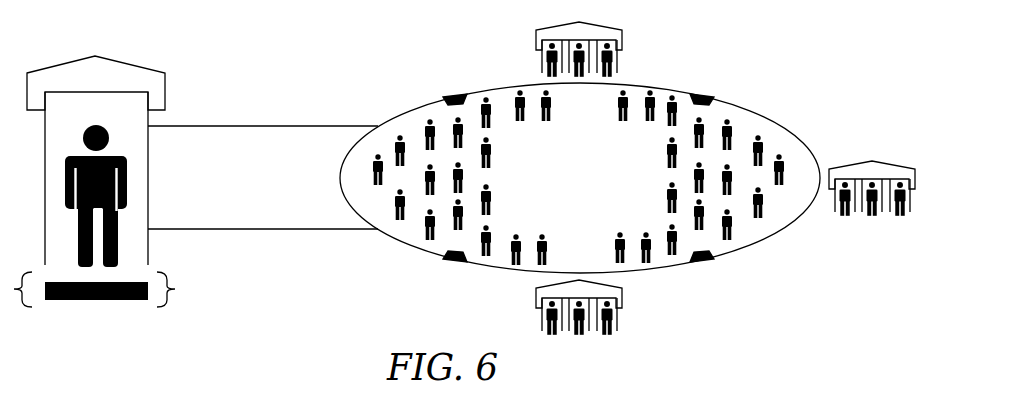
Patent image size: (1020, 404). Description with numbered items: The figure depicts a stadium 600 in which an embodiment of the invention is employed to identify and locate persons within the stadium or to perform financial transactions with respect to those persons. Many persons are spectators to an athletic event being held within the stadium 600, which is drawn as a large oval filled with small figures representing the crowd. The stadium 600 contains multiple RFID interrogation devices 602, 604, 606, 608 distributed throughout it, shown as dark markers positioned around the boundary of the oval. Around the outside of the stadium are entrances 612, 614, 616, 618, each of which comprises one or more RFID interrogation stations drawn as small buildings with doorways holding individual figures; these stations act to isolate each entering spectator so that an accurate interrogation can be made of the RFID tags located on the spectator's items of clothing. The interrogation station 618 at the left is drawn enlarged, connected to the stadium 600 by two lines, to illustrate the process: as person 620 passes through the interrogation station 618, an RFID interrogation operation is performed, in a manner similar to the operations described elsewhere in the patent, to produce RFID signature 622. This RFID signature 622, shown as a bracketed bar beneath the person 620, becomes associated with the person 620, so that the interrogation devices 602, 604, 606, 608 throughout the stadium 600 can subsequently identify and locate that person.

The stadium 600 is at (341, 173).
The RFID interrogation device 602 is at (457, 95).
The RFID interrogation device 604 is at (703, 93).
The RFID interrogation device 606 is at (703, 259).
The RFID interrogation device 608 is at (453, 257).
The entrance 612 is at (622, 40).
The entrance 614 is at (852, 163).
The entrance 616 is at (622, 298).
The interrogation station 618 is at (165, 92).
The person 620 is at (125, 168).
The RFID signature 622 is at (170, 302).